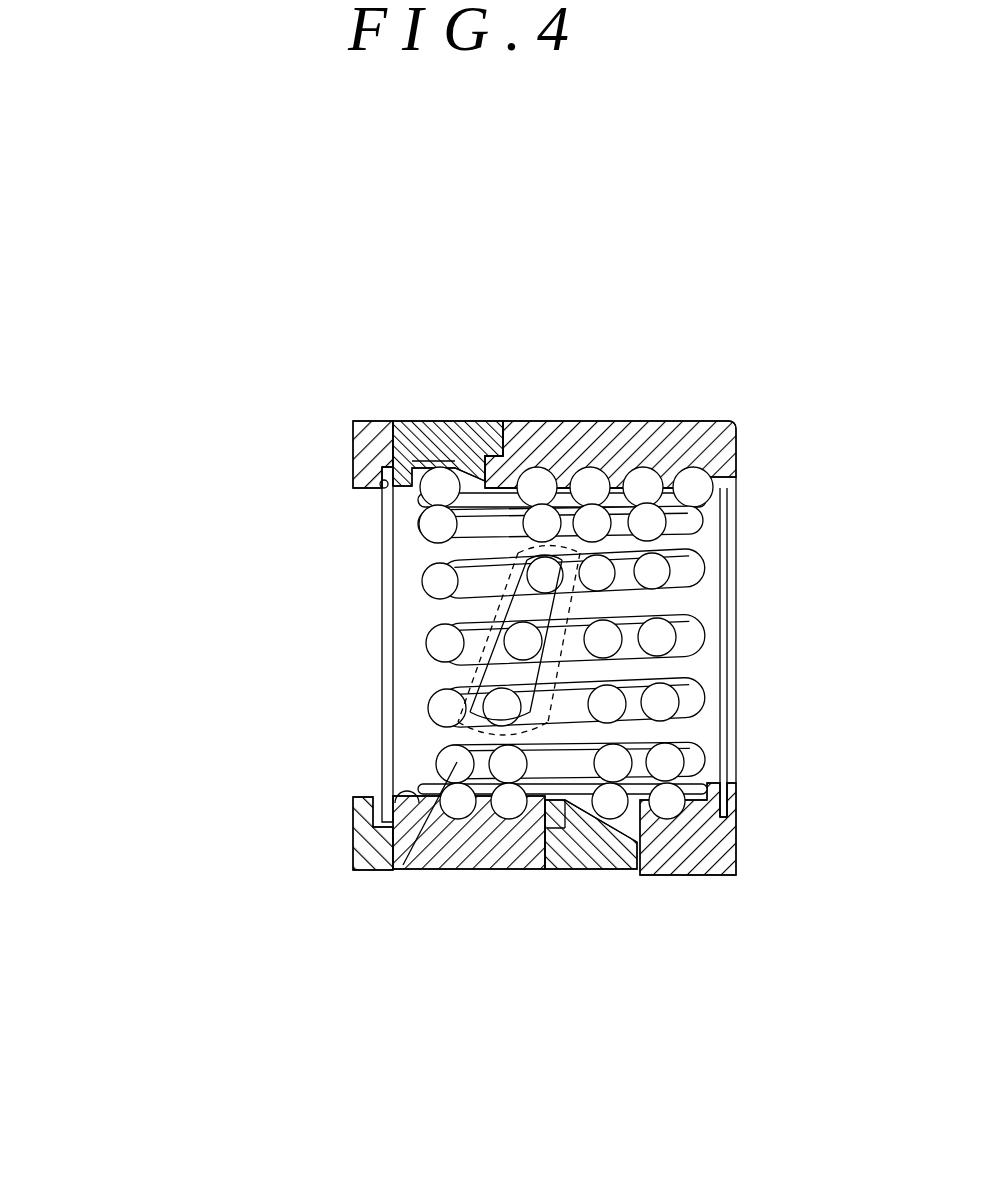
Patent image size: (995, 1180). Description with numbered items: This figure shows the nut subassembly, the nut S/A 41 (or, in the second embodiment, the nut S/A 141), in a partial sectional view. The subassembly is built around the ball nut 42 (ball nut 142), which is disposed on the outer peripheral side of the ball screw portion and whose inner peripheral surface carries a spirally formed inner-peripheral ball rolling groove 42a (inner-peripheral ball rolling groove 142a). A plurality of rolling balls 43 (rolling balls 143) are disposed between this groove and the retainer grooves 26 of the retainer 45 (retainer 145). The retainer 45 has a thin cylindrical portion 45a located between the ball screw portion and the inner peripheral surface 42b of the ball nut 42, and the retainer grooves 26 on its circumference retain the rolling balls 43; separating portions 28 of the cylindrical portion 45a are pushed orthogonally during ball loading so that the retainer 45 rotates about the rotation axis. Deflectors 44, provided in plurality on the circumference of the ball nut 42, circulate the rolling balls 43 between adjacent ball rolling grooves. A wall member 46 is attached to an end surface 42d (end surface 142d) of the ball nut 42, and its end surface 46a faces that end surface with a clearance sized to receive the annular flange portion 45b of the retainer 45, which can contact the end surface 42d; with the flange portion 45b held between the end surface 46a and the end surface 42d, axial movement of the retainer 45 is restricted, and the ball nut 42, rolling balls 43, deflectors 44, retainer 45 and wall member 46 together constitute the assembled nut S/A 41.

The retainer groove 26 is at (632, 632).
The separating portion 28 is at (628, 668).
The nut S/A 41 is at (382, 661).
The nut S/A 141 is at (382, 661).
The ball nut 42 is at (453, 639).
The ball nut 142 is at (453, 639).
The inner-peripheral ball rolling groove 42a is at (679, 418).
The inner-peripheral ball rolling groove 142a is at (737, 453).
The inner peripheral surface 42b is at (665, 802).
The end surface 42d is at (213, 471).
The end surface 142d is at (388, 462).
The rolling ball 43 is at (378, 857).
The rolling ball 143 is at (393, 868).
The deflector 44 is at (457, 420).
The retainer 45 is at (391, 668).
The retainer 145 is at (391, 668).
The cylindrical portion 45a is at (418, 676).
The flange portion 45b is at (393, 792).
The wall member 46 is at (257, 486).
The end surface 46a is at (381, 497).